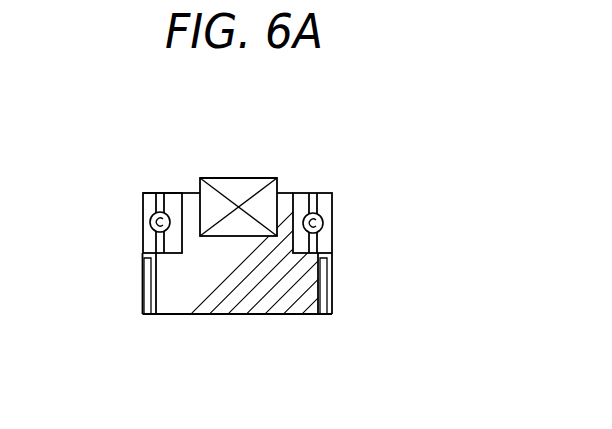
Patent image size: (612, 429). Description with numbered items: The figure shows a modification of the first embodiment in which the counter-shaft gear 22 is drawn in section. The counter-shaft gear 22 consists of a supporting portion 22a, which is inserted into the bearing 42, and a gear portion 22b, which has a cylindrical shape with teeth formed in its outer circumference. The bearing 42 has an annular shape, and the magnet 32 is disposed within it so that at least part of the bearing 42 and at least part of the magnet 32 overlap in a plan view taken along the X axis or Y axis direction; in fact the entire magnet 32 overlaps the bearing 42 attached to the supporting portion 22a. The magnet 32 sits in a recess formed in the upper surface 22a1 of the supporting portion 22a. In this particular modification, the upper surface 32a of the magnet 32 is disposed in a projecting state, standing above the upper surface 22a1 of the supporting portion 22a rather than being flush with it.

The counter-shaft gear 22 is at (332, 263).
The supporting portion 22a is at (294, 236).
The upper surface of the supporting portion 22a1 is at (195, 192).
The gear portion 22b is at (238, 313).
The magnet 32 is at (253, 188).
The upper surface of the magnet 32a is at (240, 178).
The bearing 42 is at (150, 243).